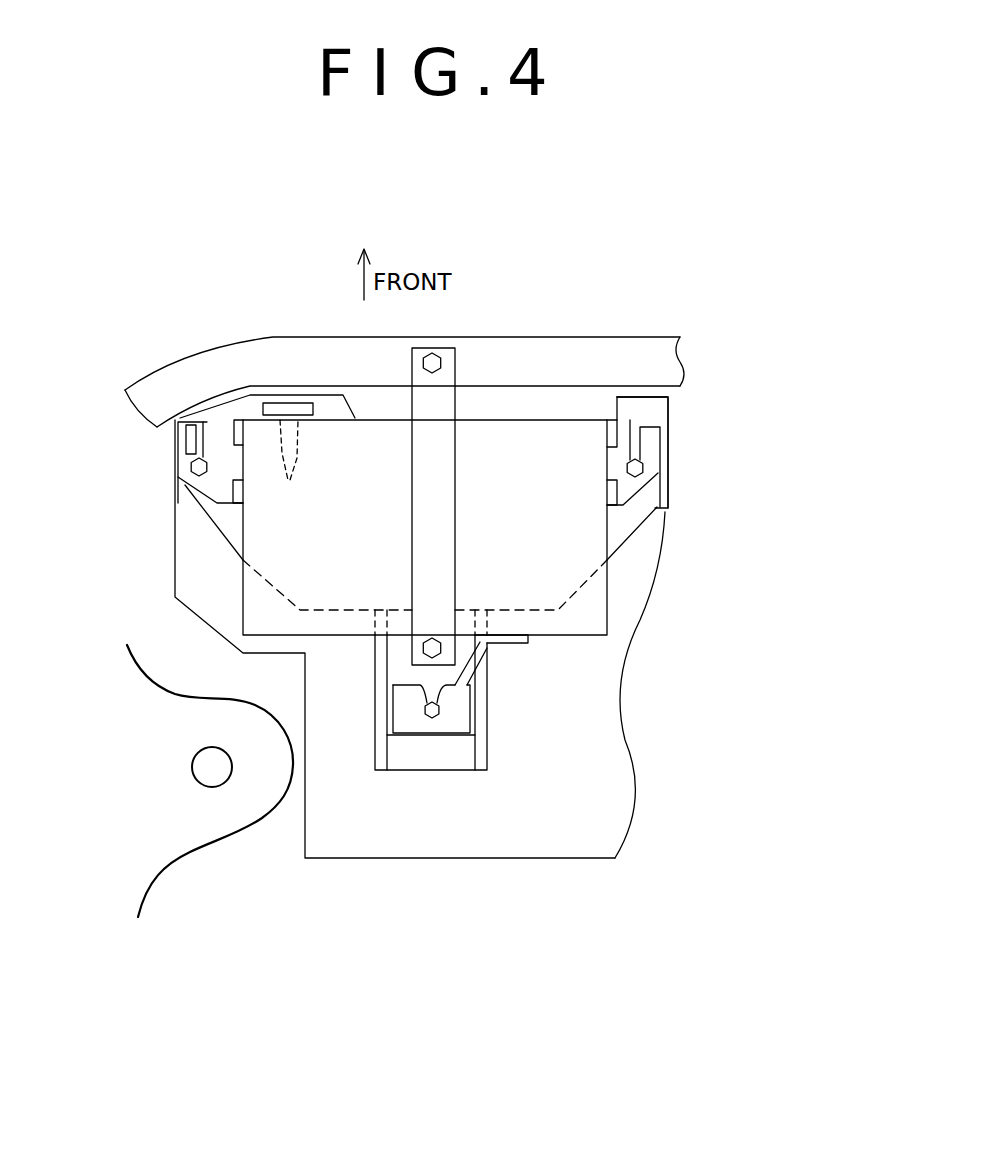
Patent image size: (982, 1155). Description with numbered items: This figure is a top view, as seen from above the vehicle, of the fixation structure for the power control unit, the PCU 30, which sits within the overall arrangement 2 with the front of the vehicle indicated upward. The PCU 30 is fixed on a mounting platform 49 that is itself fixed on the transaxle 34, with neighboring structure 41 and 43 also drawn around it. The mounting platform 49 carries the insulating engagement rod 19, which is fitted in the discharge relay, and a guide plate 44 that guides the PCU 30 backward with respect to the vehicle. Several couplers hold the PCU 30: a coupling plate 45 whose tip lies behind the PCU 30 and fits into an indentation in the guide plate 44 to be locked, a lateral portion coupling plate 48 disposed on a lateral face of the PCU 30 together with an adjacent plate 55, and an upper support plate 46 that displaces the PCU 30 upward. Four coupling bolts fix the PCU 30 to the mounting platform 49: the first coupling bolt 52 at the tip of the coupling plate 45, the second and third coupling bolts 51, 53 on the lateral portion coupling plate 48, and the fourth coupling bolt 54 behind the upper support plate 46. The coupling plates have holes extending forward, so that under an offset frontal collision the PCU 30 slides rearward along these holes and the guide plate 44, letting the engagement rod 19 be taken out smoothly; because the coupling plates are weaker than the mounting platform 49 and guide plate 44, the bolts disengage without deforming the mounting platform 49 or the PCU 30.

The vehicle seat 2 is at (606, 239).
The insulating engagement rod 19 is at (298, 445).
The power control unit (PCU) 30 is at (605, 617).
The transaxle 34 is at (540, 860).
The frame member 41 is at (227, 342).
The side frame 43 is at (210, 843).
The guide plate 44 is at (490, 755).
The coupling plate 45 is at (510, 647).
The upper support plate 46 is at (457, 517).
The lateral portion coupling plate 48 is at (187, 445).
The mounting platform 49 is at (213, 535).
The second coupling bolt 51 is at (643, 466).
The first coupling bolt 52 is at (430, 718).
The third coupling bolt 53 is at (190, 467).
The fourth coupling bolt 54 is at (423, 648).
The plate 55 is at (670, 412).